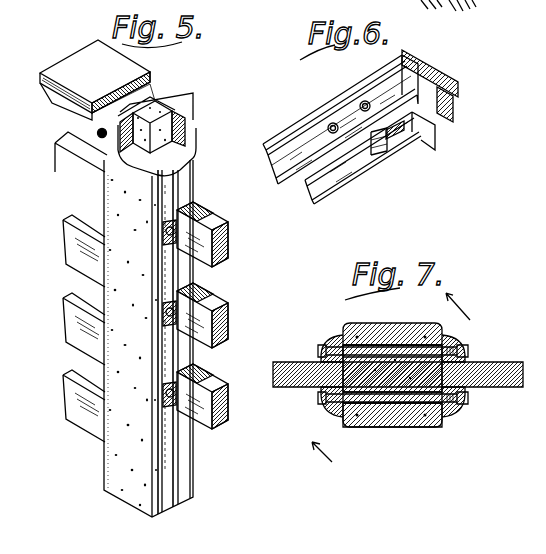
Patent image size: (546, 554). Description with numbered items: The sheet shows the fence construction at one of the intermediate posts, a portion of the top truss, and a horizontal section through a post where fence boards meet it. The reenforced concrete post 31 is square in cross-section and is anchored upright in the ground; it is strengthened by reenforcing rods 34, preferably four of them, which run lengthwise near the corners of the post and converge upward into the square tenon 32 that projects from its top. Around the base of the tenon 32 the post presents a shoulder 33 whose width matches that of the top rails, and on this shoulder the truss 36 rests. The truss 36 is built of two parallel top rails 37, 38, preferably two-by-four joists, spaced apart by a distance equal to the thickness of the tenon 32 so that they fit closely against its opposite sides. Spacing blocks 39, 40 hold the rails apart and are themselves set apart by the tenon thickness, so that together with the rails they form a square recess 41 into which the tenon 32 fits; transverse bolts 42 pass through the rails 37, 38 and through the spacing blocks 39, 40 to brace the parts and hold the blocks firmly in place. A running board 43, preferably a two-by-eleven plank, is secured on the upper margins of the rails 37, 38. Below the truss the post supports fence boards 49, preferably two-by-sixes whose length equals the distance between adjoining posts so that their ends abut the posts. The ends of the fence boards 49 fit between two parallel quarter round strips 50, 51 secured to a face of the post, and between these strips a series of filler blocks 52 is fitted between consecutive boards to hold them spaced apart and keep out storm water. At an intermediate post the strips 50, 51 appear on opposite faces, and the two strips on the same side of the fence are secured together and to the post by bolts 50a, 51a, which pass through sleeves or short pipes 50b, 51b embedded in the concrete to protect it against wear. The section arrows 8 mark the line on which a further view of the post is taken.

In FIG. 7, the section line 8 is at (388, 381).
In FIG. 7, the reenforced concrete post 31 is at (442, 428).
In FIG. 5, the square tenon 32 is at (180, 130).
In FIG. 5, the shoulder 33 is at (180, 160).
In FIG. 7, the reenforcing rods 34 is at (422, 338).
In FIG. 5, the truss 36 is at (44, 93).
In FIG. 6, the truss 36 is at (462, 80).
In FIG. 5, the top rail 37 is at (103, 148).
In FIG. 6, the top rail 37 is at (408, 88).
In FIG. 5, the top rail 38 is at (163, 113).
In FIG. 6, the top rail 38 is at (457, 110).
In FIG. 5, the spacing block 39 is at (133, 102).
In FIG. 6, the spacing block 39 is at (355, 150).
In FIG. 6, the spacing block 40 is at (392, 136).
In FIG. 5, the square recess 41 is at (152, 108).
In FIG. 6, the square recess 41 is at (378, 140).
In FIG. 5, the transverse bolts 42 is at (96, 131).
In FIG. 6, the transverse bolts 42 is at (330, 124).
In FIG. 5, the running board 43 is at (112, 98).
In FIG. 6, the running board 43 is at (264, 142).
In FIG. 5, the fence boards 49 is at (73, 218).
In FIG. 5, the quarter round strip 50 is at (163, 483).
In FIG. 7, the quarter round strip 50 is at (338, 417).
In FIG. 5, the bolt 50a is at (177, 232).
In FIG. 7, the bolt 50a is at (376, 428).
In FIG. 7, the sleeve or short pipe 50b is at (398, 430).
In FIG. 5, the quarter round strip 51 is at (192, 365).
In FIG. 7, the quarter round strip 51 is at (443, 333).
In FIG. 7, the bolt 51a is at (362, 350).
In FIG. 7, the sleeve or short pipe 51b is at (384, 385).
In FIG. 5, the filler blocks 52 is at (182, 337).